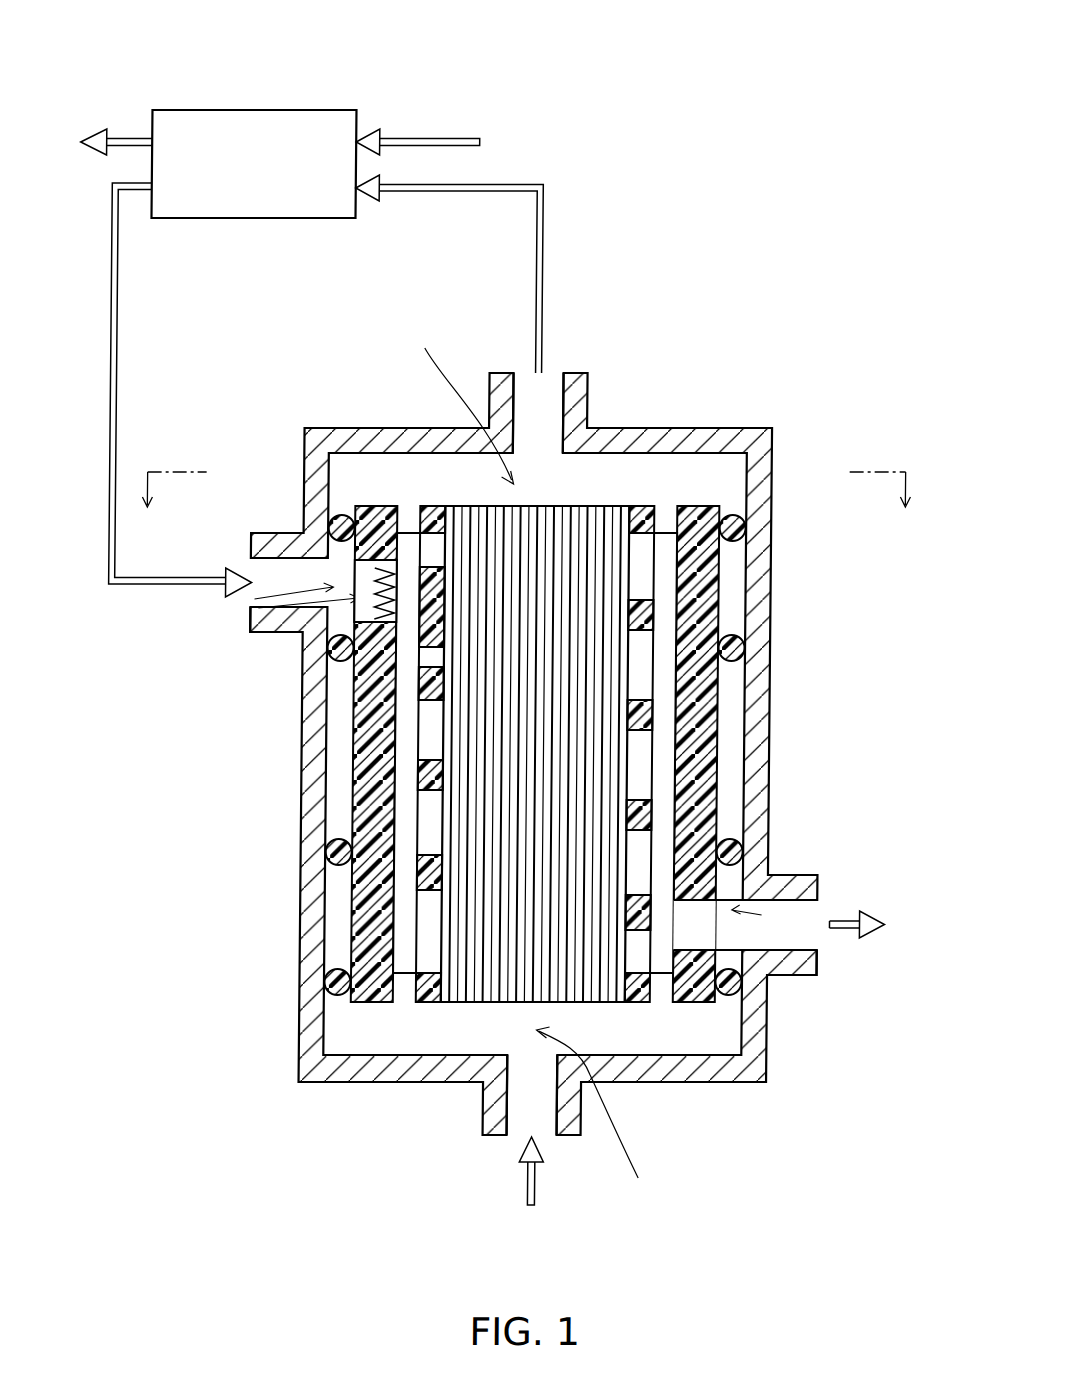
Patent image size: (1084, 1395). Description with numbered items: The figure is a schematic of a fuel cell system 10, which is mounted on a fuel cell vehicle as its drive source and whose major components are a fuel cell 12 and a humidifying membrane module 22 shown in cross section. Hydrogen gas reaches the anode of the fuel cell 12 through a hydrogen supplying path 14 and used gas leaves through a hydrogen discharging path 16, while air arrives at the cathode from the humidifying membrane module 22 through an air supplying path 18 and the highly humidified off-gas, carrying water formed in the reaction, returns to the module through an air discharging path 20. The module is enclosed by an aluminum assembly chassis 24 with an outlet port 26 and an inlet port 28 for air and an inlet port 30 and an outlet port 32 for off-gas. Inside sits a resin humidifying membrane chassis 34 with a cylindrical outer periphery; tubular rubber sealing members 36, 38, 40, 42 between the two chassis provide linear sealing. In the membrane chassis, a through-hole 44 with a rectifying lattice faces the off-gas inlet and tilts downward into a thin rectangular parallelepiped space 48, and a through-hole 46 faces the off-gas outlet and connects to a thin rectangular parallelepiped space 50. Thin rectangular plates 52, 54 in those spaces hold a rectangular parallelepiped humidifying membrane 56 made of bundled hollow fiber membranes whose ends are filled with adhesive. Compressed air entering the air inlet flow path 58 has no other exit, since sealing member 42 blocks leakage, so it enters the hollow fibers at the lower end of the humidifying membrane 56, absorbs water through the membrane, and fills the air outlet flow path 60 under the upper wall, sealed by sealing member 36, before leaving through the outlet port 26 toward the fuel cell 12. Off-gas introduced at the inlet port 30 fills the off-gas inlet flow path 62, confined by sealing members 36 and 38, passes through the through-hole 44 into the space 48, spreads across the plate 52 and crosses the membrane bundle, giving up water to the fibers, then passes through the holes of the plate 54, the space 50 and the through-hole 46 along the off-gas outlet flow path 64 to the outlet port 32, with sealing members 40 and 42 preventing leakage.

The fuel cell system 10 is at (635, 98).
The fuel cell 12 is at (233, 110).
The hydrogen supplying path 14 is at (432, 138).
The hydrogen discharging path 16 is at (131, 136).
The air supplying path 18 is at (494, 184).
The air discharging path 20 is at (119, 312).
The humidifying membrane module 22 is at (664, 378).
The assembly chassis 24 is at (704, 420).
The outlet port 26 is at (556, 378).
The inlet port 28 is at (525, 1120).
The inlet port 30 is at (266, 578).
The outlet port 32 is at (814, 906).
The humidifying membrane chassis 34 is at (708, 506).
The sealing member 36 is at (344, 518).
The sealing member 38 is at (340, 663).
The sealing member 40 is at (344, 850).
The sealing member 42 is at (342, 985).
The through-hole with a rectifying lattice 44 is at (284, 640).
The through-hole 46 is at (785, 962).
The thin rectangular parallelepiped space 48 is at (412, 720).
The thin rectangular parallelepiped space 50 is at (668, 736).
The thin rectangular plate 52 is at (430, 988).
The thin rectangular plate 54 is at (646, 990).
The humidifying membrane 56 is at (478, 998).
The air inlet flow path 58 is at (606, 1115).
The air outlet flow path 60 is at (458, 401).
The off-gas inlet flow path 62 is at (370, 592).
The off-gas outlet flow path 64 is at (706, 921).